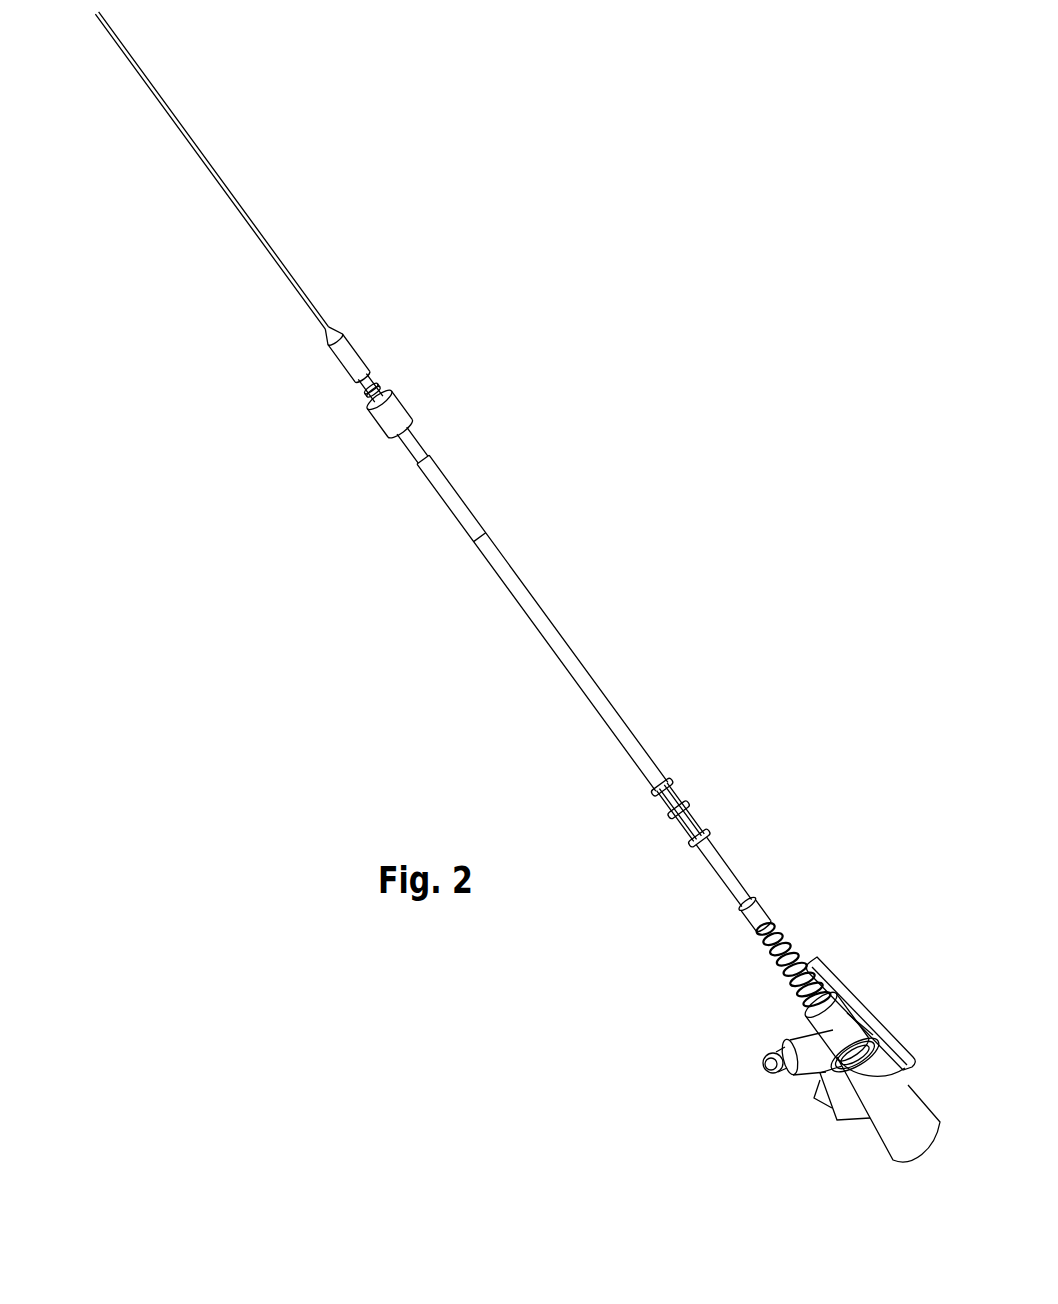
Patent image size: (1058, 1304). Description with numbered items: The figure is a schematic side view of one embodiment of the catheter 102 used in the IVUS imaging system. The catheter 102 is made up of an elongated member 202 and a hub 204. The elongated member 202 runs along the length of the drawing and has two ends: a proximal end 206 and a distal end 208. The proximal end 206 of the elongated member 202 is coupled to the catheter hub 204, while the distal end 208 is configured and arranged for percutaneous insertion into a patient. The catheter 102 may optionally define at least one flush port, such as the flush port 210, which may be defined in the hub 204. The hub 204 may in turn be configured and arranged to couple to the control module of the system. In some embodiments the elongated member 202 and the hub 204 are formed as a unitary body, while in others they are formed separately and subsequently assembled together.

The catheter 102 is at (583, 284).
The elongated member 202 is at (248, 543).
The hub 204 is at (920, 901).
The proximal end 206 is at (665, 964).
The distal end 208 is at (81, 84).
The flush port 210 is at (790, 1072).